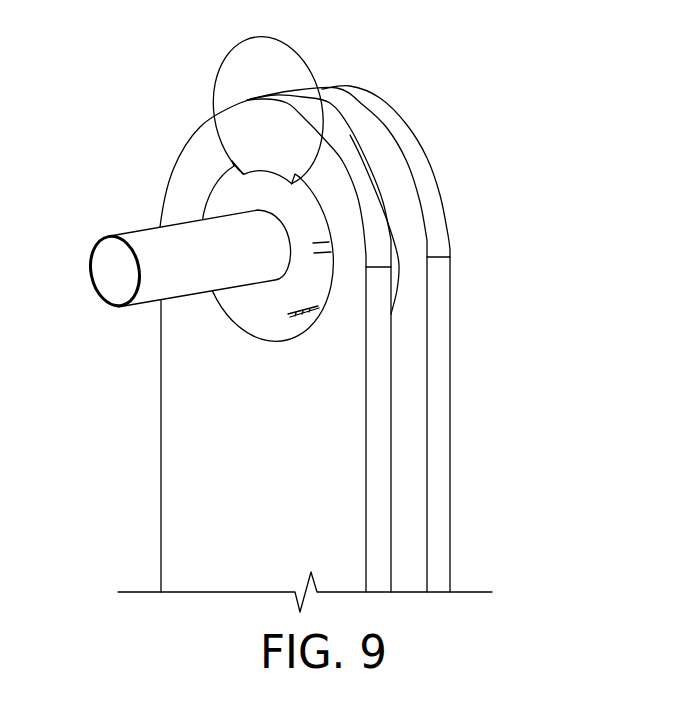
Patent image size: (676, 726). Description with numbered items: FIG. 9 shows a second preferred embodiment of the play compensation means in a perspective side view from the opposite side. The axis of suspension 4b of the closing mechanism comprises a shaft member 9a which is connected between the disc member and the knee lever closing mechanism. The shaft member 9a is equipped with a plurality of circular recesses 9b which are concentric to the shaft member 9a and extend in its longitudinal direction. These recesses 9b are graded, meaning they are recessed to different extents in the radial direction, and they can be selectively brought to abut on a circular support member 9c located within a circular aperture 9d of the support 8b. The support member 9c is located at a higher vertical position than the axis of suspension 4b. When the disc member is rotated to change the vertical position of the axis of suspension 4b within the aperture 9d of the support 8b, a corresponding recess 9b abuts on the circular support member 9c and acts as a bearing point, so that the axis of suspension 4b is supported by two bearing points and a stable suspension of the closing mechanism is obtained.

The axis of suspension 4b is at (152, 245).
The support 8b is at (340, 373).
The shaft member 9a is at (267, 305).
The circular recesses 9b is at (303, 217).
The circular support member 9c is at (258, 170).
The circular aperture 9d is at (293, 328).